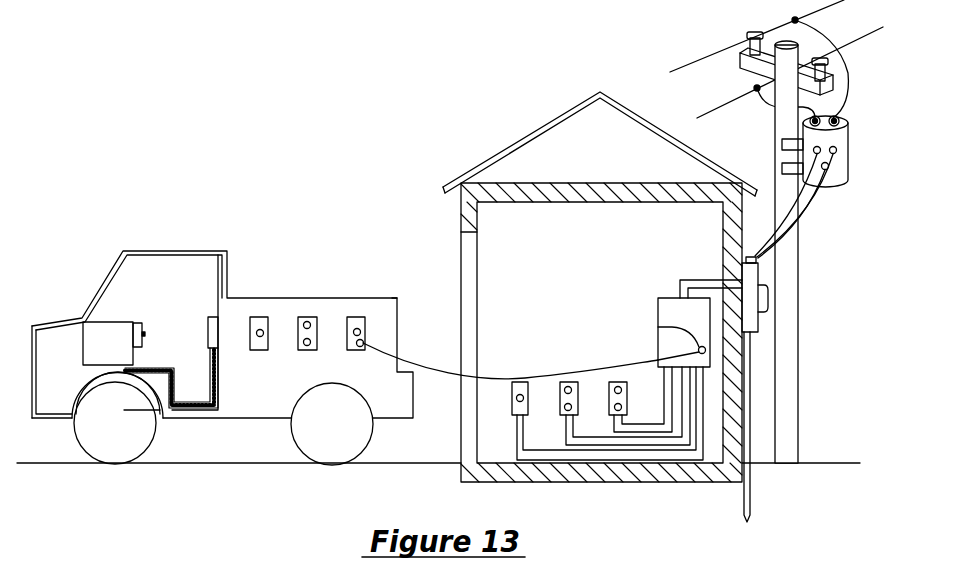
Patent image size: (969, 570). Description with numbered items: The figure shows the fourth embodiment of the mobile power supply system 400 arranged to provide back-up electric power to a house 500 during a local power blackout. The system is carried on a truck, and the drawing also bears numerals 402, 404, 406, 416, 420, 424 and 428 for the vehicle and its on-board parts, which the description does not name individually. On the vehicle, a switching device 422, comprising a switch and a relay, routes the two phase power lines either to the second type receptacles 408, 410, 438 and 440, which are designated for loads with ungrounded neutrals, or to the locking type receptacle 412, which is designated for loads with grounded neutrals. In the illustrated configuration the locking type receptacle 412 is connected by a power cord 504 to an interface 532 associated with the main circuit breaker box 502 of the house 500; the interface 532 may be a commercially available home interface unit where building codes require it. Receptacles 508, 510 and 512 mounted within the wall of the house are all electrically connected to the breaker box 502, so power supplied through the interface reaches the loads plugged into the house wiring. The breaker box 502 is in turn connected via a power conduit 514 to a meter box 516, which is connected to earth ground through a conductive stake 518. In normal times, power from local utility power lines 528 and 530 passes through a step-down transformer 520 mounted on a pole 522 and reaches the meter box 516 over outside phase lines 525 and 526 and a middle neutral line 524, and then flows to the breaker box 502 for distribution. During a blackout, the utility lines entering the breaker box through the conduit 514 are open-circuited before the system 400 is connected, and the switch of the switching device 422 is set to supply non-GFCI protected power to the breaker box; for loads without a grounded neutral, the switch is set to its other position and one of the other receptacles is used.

The mobile power supply system 400 is at (385, 276).
The vehicle 402 is at (63, 316).
The engine 404 is at (118, 329).
The conduit 406 is at (197, 398).
The second type receptacle 408 is at (212, 316).
The second type receptacle 410 is at (307, 321).
The locking type receptacle 412 is at (364, 322).
The vehicle cab 416 is at (166, 272).
The output connector 420 is at (364, 344).
The switching device 422 is at (142, 322).
The output panel 424 is at (357, 328).
The housing 428 is at (392, 298).
The second type receptacle 438 is at (311, 342).
The second type receptacle 440 is at (264, 333).
The house 500 is at (514, 127).
The main circuit breaker box 502 is at (658, 304).
The power cord 504 is at (540, 377).
The receptacle 508 is at (524, 398).
The receptacle 510 is at (578, 398).
The receptacle 512 is at (618, 381).
The power conduit 514 is at (697, 278).
The meter box 516 is at (760, 315).
The ground stake 518 is at (751, 495).
The step-down transformer 520 is at (852, 143).
The pole 522 is at (800, 373).
The middle neutral line 524 is at (805, 222).
The outside phase line 525 is at (813, 205).
The outside phase line 526 is at (802, 244).
The utility power line 528 is at (716, 52).
The utility power line 530 is at (731, 103).
The interface 532 is at (658, 327).